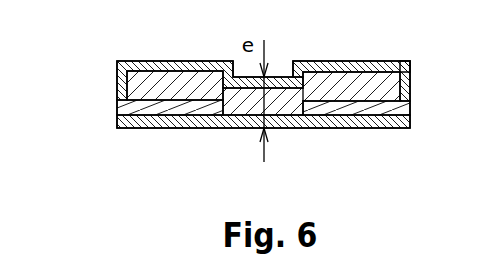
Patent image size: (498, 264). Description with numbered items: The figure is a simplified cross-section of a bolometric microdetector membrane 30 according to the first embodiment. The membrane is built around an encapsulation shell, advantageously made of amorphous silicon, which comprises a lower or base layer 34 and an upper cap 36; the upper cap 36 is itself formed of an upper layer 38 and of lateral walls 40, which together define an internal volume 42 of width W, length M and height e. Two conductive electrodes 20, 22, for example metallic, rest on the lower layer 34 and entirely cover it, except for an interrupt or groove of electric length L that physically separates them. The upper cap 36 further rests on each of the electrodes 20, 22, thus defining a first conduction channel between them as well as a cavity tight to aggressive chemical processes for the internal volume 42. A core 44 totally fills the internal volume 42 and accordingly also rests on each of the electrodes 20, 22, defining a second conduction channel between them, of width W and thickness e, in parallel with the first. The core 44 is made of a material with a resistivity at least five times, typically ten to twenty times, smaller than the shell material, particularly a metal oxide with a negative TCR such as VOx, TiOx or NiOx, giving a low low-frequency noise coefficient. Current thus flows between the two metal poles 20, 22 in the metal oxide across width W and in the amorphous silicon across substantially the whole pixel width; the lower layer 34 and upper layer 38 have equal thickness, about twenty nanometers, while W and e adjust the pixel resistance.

The bolometric microdetector membrane 30 is at (98, 70).
The upper cap 36 is at (137, 69).
The upper layer 38 is at (334, 62).
The lateral walls 40 is at (411, 85).
The internal volume 42 is at (165, 88).
The core 44 is at (285, 98).
The conductive electrode 20 is at (195, 107).
The conductive electrode 22 is at (357, 100).
The lower layer 34 is at (232, 123).